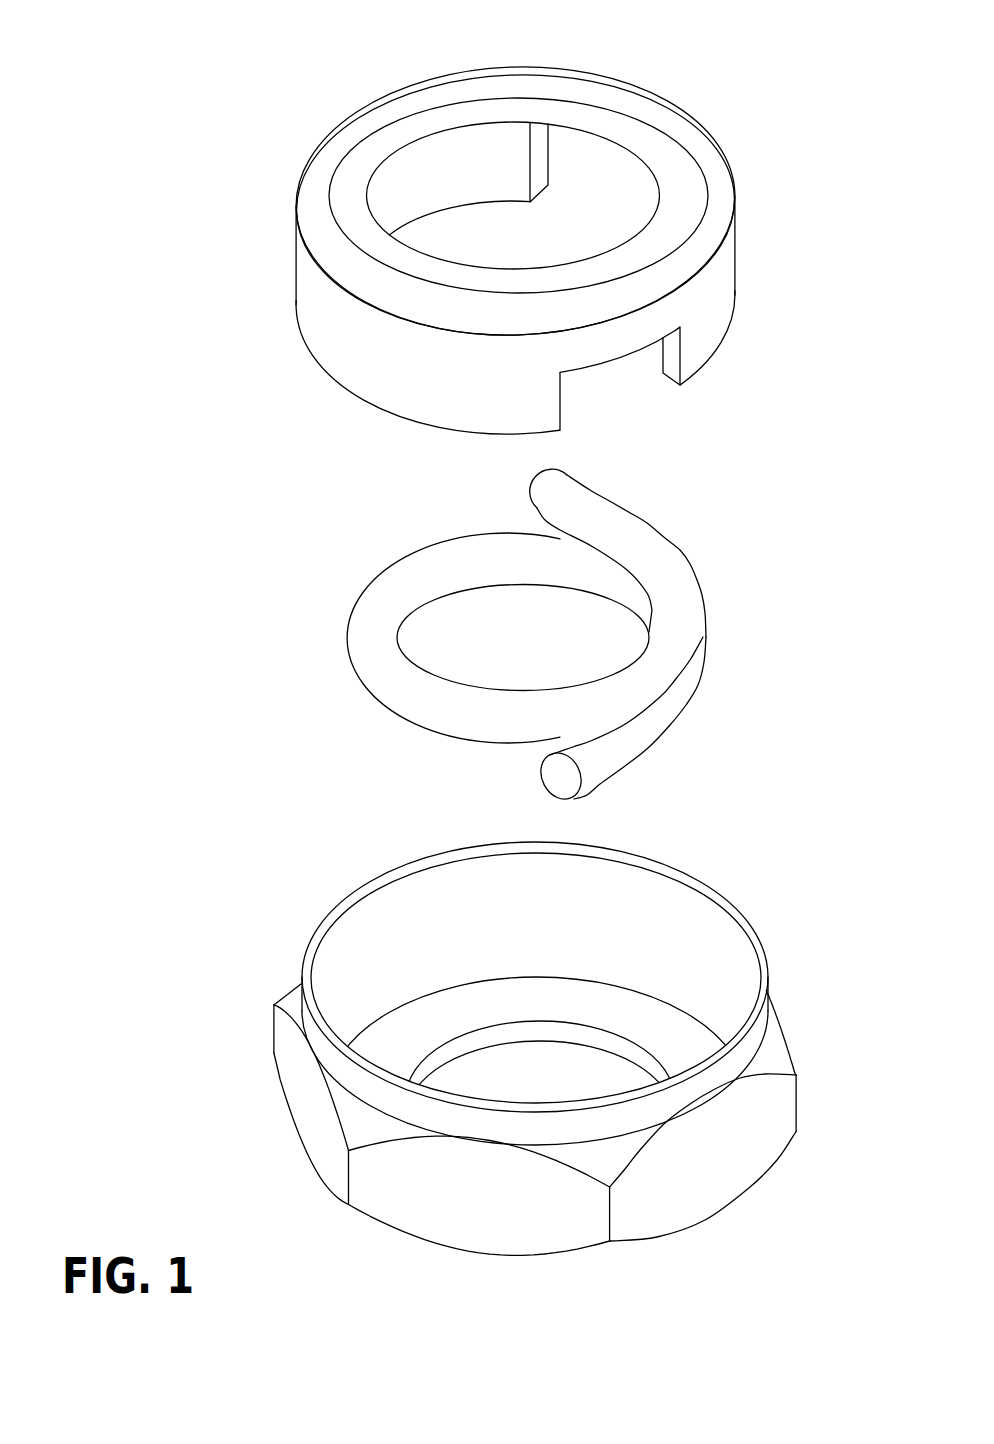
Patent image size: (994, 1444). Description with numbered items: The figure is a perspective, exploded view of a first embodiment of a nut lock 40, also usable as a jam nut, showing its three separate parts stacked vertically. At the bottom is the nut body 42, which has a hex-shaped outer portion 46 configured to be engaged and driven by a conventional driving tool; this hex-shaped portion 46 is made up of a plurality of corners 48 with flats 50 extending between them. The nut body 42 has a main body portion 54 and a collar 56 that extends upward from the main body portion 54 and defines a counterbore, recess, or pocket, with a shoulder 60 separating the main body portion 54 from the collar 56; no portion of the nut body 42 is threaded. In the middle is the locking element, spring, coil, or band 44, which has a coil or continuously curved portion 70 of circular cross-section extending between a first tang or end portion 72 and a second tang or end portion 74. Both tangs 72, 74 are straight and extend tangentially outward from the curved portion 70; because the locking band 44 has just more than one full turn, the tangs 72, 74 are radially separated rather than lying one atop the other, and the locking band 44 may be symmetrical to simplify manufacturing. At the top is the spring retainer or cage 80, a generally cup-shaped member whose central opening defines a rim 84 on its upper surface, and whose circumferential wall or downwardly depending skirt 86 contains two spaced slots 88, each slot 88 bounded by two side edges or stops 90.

The nut lock 40 is at (115, 408).
The nut body 42 is at (545, 1080).
The locking band 44 is at (488, 630).
The hex-shaped outer portion 46 is at (705, 1218).
The corners 48 is at (608, 1218).
The flats 50 is at (443, 1207).
The main body portion 54 is at (262, 1000).
The collar 56 is at (740, 907).
The shoulder 60 is at (405, 1037).
The curved portion 70 is at (352, 632).
The first tang 72 is at (612, 762).
The second tang 74 is at (553, 500).
The cage 80 is at (502, 244).
The rim 84 is at (376, 133).
The skirt 86 is at (327, 322).
The slots 88 is at (618, 176).
The stops 90 is at (545, 160).